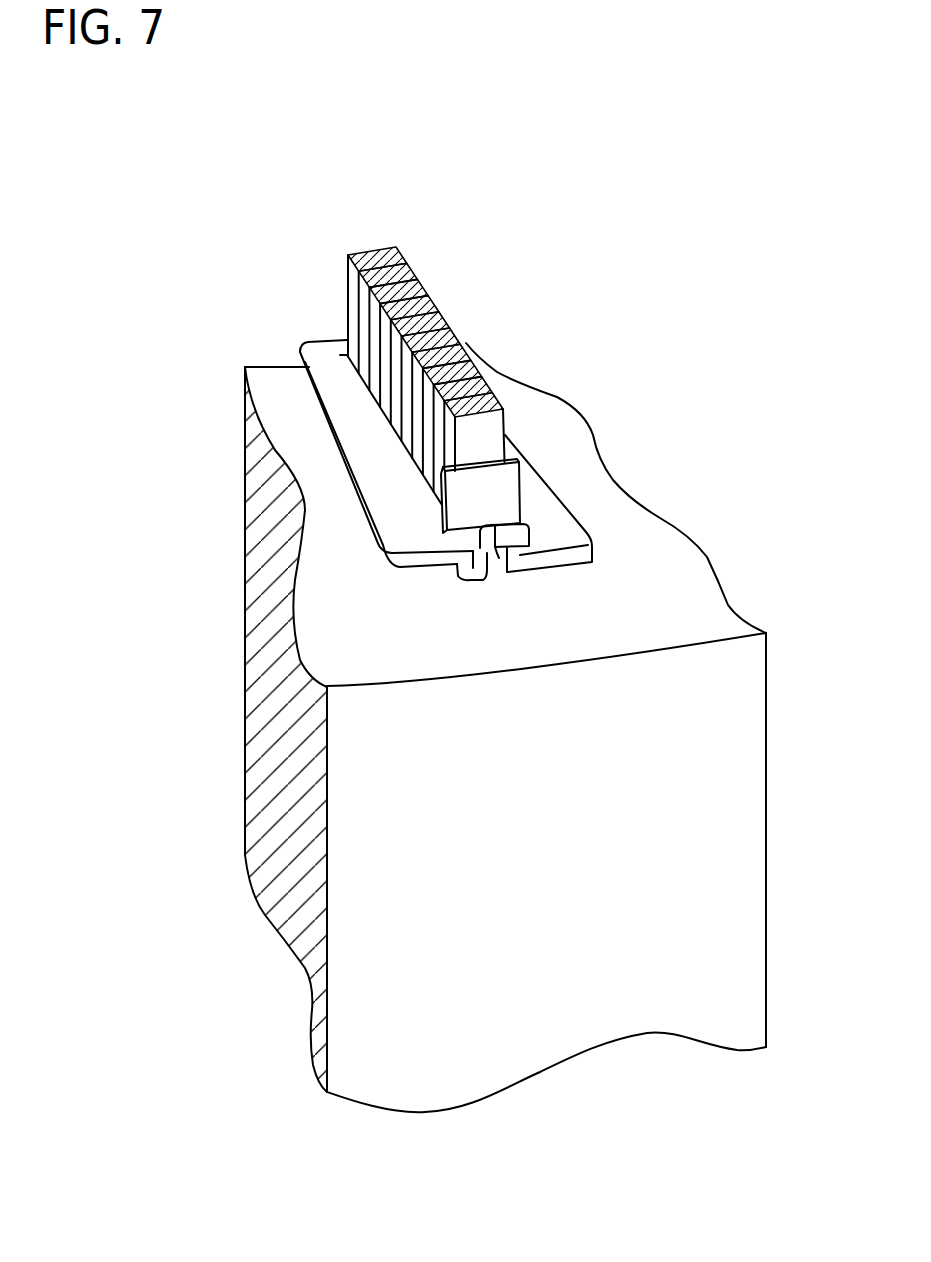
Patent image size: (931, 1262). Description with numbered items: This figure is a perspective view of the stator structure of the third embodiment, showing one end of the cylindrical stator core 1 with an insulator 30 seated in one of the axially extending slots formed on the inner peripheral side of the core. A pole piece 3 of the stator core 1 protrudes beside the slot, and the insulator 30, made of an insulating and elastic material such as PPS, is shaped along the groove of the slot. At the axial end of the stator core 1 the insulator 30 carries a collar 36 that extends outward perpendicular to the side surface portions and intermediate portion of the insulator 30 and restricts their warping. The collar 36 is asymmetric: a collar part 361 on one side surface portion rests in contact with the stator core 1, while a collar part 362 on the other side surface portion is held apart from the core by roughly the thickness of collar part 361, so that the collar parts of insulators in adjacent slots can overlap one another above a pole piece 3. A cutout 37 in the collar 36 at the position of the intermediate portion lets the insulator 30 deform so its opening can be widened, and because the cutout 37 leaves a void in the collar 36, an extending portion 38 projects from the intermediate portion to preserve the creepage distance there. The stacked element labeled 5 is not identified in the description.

The stator core 1 is at (738, 910).
The pole piece 3 is at (270, 373).
The stacked body 5 is at (415, 284).
The insulator 30 is at (462, 415).
The collar 36 is at (429, 480).
The collar part 361 is at (530, 480).
The collar part 362 is at (350, 410).
The cutout 37 is at (497, 563).
The extending portion 38 is at (502, 492).